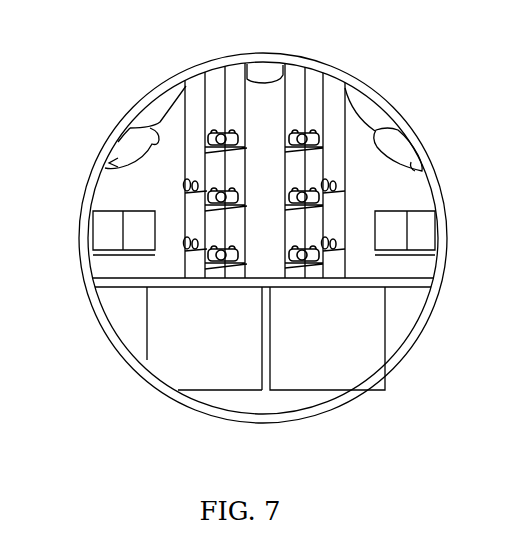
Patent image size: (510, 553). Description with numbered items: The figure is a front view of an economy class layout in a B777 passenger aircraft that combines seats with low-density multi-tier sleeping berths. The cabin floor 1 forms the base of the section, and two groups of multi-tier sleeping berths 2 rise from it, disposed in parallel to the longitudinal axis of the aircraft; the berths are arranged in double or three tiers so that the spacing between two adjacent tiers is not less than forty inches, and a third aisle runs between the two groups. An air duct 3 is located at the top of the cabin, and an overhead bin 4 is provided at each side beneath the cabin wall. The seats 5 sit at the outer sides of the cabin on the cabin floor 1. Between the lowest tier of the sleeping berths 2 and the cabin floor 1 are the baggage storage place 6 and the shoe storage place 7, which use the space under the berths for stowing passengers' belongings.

The cabin floor 1 is at (121, 281).
The multi-tier sleeping berths 2 is at (197, 120).
The air duct 3 is at (262, 72).
The overhead bin 4 is at (132, 146).
The seats 5 is at (116, 240).
The baggage storage place 6 is at (332, 272).
The shoe storage place 7 is at (306, 266).